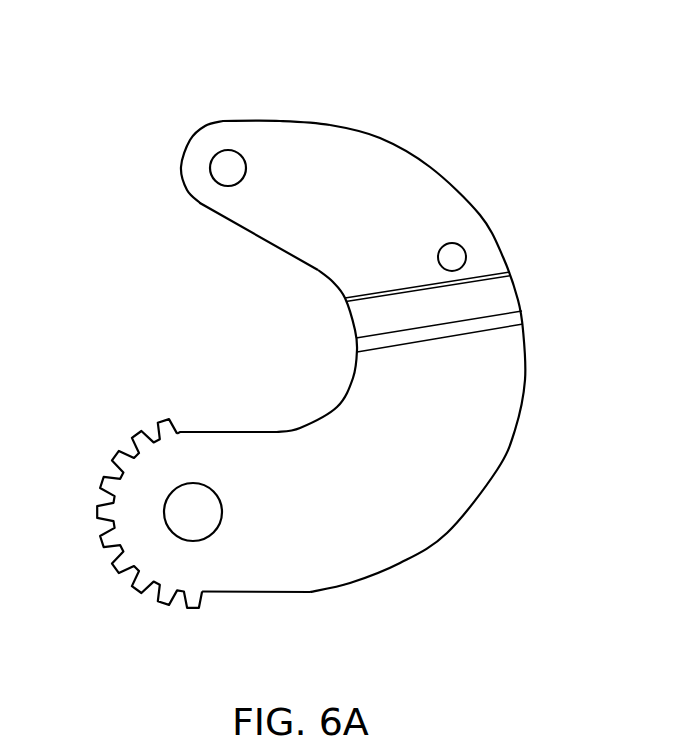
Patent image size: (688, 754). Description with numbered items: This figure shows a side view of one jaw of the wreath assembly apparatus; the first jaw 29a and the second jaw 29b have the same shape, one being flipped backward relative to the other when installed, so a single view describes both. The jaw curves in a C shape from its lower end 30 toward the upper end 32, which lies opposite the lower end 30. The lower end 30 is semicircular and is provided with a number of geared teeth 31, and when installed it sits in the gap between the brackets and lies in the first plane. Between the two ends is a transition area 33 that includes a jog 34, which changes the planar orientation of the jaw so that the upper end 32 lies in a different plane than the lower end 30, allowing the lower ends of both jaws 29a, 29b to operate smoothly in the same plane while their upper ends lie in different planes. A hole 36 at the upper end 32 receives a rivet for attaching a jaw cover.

The first jaw 29a is at (451, 351).
The second jaw 29b is at (505, 178).
The lower end 30 is at (231, 612).
The geared teeth 31 is at (185, 600).
The upper end 32 is at (239, 86).
The transition area 33 is at (550, 258).
The jog 34 is at (507, 292).
The hole 36 is at (222, 175).